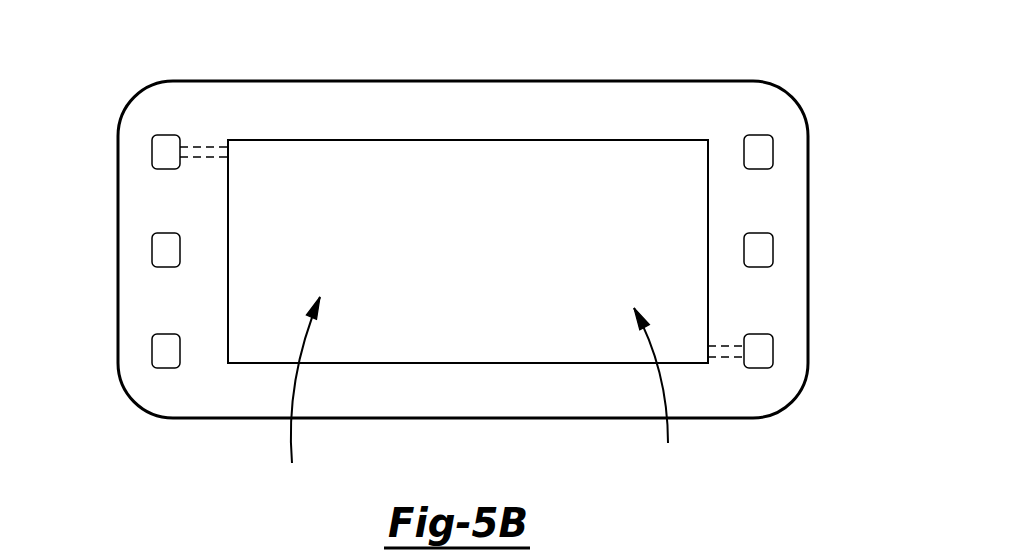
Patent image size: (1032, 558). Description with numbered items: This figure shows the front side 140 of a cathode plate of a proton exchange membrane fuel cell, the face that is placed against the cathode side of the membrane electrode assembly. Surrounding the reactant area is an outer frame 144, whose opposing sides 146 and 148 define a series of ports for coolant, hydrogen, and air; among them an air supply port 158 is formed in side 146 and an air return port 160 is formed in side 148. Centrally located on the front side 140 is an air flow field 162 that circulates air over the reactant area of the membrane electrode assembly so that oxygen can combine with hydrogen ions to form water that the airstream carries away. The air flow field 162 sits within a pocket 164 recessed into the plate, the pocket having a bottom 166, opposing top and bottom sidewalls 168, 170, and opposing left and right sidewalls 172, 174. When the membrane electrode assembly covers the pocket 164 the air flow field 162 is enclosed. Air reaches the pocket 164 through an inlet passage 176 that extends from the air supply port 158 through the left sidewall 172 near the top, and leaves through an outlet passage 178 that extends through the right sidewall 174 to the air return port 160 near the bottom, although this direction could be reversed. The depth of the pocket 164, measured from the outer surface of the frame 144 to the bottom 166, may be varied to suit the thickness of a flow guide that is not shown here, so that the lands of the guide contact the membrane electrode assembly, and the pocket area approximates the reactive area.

The front side 140 is at (678, 95).
The outer frame 144 is at (792, 159).
The side 146 is at (137, 200).
The side 148 is at (792, 230).
The air supply port 158 is at (165, 152).
The air return port 160 is at (757, 350).
The air flow field 162 is at (299, 396).
The pocket 164 is at (659, 392).
The bottom 166 is at (493, 205).
The top sidewall 168 is at (379, 140).
The bottom sidewall 170 is at (525, 363).
The left sidewall 172 is at (228, 298).
The right sidewall 174 is at (708, 302).
The inlet passage 176 is at (202, 147).
The outlet passage 178 is at (727, 357).